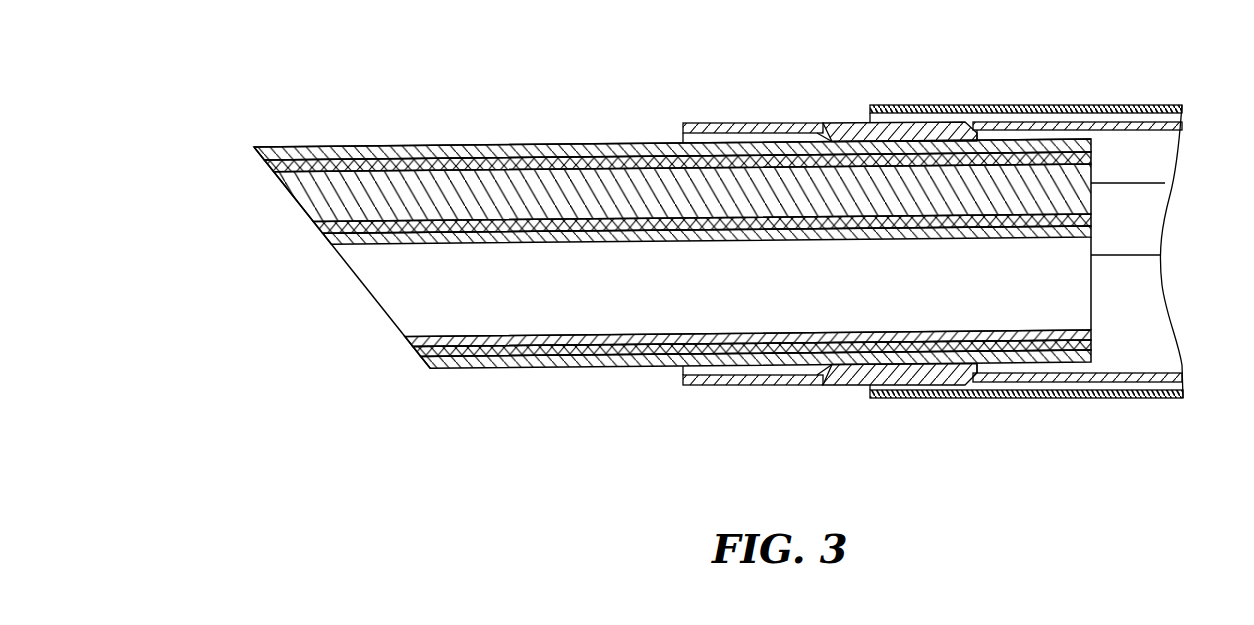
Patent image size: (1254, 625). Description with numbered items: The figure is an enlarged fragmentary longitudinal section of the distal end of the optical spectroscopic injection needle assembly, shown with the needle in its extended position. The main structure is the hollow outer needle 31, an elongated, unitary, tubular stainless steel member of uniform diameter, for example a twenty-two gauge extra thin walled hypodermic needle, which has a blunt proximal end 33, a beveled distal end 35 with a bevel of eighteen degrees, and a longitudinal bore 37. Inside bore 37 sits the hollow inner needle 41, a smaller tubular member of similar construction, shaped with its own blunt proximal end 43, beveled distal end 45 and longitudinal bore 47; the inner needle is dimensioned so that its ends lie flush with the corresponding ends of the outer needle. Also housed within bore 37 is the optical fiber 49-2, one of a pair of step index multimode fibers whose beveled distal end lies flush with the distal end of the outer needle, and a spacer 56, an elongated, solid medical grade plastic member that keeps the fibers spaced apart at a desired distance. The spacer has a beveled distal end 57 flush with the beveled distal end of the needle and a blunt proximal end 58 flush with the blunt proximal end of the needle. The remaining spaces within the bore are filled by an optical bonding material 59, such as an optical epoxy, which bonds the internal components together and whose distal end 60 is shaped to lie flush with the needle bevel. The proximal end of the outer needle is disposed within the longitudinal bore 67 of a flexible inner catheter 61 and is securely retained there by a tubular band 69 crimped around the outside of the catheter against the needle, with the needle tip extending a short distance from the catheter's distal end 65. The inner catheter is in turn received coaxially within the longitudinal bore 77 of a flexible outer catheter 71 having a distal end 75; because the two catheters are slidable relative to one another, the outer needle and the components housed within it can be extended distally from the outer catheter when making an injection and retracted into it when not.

The outer needle 31 is at (403, 142).
The blunt proximal end 33 is at (1091, 145).
The beveled distal end 35 is at (423, 366).
The longitudinal bore 37 is at (493, 359).
The inner needle 41 is at (350, 286).
The blunt proximal end 43 is at (1091, 337).
The beveled distal end 45 is at (408, 340).
The longitudinal bore 47 is at (699, 290).
The optical fiber 49-2 is at (1126, 266).
The spacer 56 is at (551, 180).
The distal end 57 is at (293, 197).
The proximal end 58 is at (1091, 195).
The bonding material 59 is at (492, 160).
The distal end 60 is at (269, 166).
The inner catheter 61 is at (745, 395).
The distal end 65 is at (683, 128).
The longitudinal bore 67 is at (727, 133).
The tubular band 69 is at (848, 133).
The outer catheter 71 is at (1113, 410).
The distal end 75 is at (870, 389).
The longitudinal bore 77 is at (1042, 383).